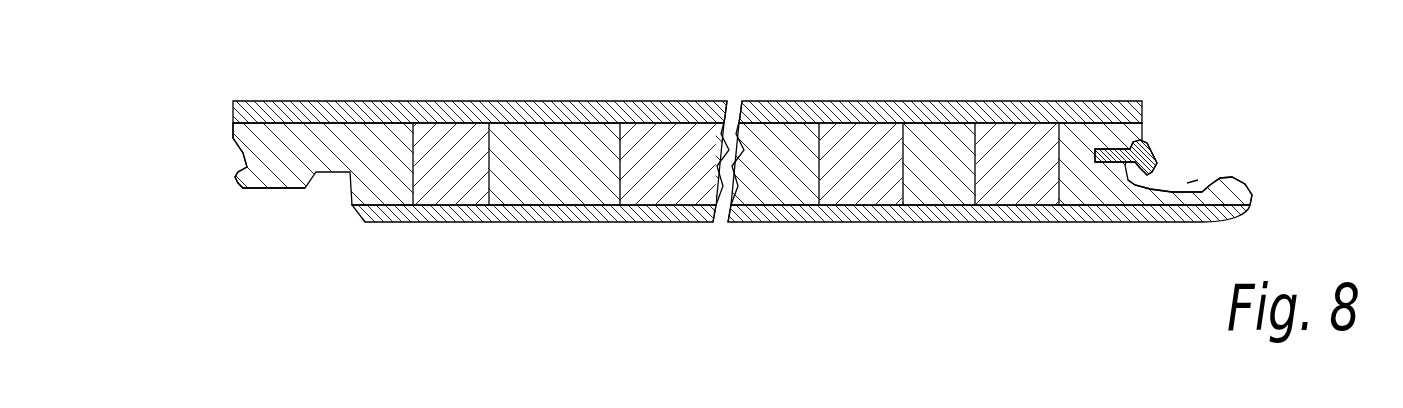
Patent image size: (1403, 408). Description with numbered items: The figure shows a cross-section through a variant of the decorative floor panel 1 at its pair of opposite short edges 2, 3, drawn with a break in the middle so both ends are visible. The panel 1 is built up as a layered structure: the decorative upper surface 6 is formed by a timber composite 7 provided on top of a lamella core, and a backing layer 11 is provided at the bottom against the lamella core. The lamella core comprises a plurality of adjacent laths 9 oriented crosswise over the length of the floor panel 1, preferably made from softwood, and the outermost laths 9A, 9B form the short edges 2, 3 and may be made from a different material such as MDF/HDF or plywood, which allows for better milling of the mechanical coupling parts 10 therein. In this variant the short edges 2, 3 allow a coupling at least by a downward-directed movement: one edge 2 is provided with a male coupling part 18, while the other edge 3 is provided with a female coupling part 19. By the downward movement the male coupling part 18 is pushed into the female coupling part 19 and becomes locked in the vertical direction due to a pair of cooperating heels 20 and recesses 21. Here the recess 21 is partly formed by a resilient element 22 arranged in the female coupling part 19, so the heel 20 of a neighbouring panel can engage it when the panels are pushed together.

The floor panel 1 is at (696, 158).
The short edge 2 is at (200, 168).
The short edge 3 is at (1225, 143).
The decorative upper surface 6 is at (687, 77).
The timber composite 7 is at (1050, 110).
The laths 9 is at (742, 147).
The outermost lath 9A is at (358, 162).
The outermost lath 9B is at (1102, 180).
The mechanical coupling parts 10 is at (283, 215).
The backing layer 11 is at (777, 212).
The male coupling part 18 is at (240, 135).
The female coupling part 19 is at (1203, 218).
The heel 20 is at (242, 187).
The recess 21 is at (1142, 188).
The resilient element 22 is at (1127, 178).